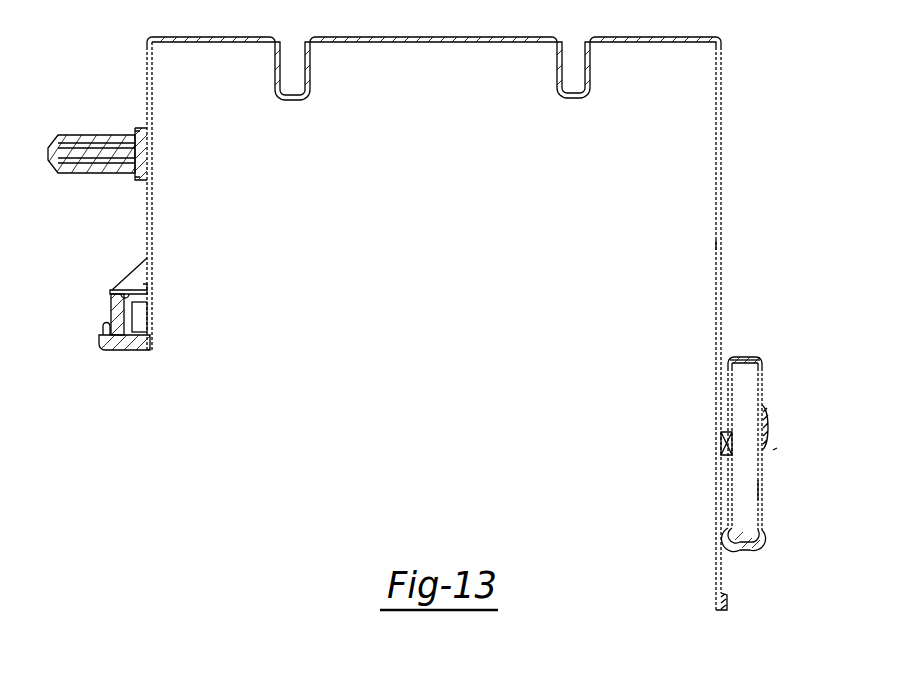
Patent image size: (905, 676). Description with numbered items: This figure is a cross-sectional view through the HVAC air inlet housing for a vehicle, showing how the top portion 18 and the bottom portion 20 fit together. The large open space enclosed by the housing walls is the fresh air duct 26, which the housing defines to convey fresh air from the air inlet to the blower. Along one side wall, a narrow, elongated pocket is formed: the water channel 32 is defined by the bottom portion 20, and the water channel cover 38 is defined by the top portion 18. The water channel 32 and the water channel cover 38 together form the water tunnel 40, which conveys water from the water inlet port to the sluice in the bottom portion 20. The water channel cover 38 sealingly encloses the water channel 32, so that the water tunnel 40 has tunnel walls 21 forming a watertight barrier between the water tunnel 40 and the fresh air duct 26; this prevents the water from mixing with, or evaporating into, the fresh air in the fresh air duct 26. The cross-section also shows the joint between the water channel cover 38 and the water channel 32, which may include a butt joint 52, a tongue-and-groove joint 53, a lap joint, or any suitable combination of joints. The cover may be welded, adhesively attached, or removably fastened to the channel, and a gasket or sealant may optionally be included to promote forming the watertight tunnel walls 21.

The top portion 18 is at (722, 74).
The bottom portion 20 is at (724, 610).
The tunnel walls 21 is at (732, 385).
The fresh air duct 26 is at (634, 319).
The water channel 32 is at (763, 495).
The water channel cover 38 is at (762, 378).
The water tunnel 40 is at (787, 443).
The butt joint 52 is at (720, 440).
The tongue-and-groove joint 53 is at (767, 420).